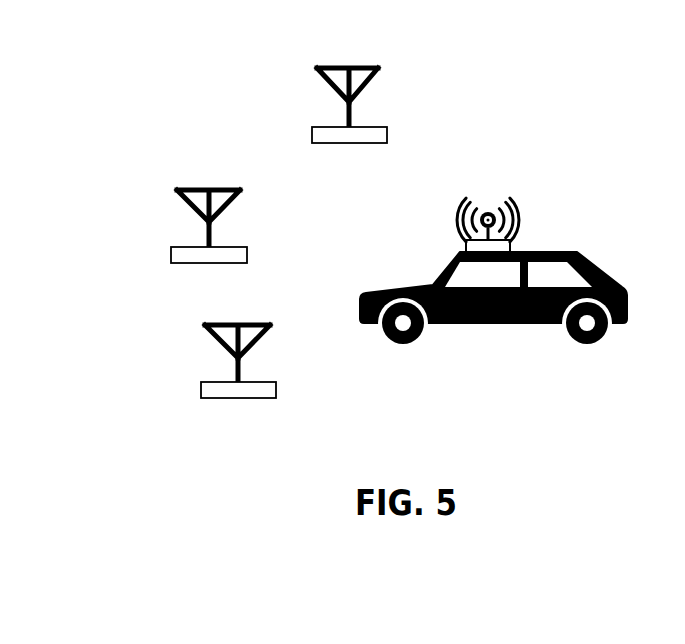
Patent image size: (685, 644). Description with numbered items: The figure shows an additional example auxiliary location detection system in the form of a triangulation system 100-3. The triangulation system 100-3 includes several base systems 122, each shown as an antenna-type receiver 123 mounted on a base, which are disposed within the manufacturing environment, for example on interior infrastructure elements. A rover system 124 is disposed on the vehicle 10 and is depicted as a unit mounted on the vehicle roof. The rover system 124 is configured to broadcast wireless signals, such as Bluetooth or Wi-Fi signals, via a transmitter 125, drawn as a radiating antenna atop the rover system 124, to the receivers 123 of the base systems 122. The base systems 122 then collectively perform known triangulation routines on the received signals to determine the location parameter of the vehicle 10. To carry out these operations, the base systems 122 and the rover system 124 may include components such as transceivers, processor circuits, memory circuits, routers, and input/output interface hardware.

The vehicle 10 is at (598, 263).
The triangulation system 100-3 is at (587, 143).
The base systems 122 is at (370, 126).
The receivers 123 is at (359, 66).
The rover system 124 is at (512, 240).
The transmitter 125 is at (490, 212).